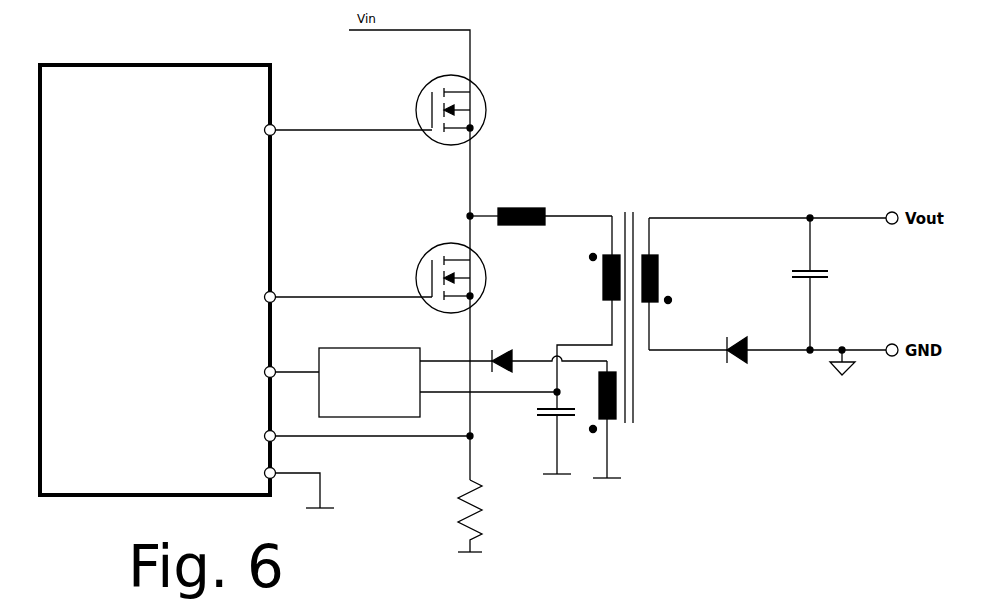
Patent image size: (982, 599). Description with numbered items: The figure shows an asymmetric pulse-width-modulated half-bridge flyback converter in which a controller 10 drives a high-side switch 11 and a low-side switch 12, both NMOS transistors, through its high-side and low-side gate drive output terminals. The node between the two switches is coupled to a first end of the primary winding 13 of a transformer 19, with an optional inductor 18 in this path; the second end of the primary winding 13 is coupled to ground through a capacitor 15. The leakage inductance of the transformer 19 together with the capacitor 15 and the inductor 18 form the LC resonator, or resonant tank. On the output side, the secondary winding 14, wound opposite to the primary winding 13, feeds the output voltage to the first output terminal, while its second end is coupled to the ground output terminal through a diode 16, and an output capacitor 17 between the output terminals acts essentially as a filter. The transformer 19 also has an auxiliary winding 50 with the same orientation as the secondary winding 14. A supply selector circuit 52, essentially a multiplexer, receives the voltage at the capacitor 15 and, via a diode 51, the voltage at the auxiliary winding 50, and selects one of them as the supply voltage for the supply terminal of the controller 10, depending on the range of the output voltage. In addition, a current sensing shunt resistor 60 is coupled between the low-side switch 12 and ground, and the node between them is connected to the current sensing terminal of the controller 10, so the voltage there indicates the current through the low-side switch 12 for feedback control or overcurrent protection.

The controller 10 is at (140, 65).
The high-side switch 11 is at (483, 120).
The low-side switch 12 is at (485, 287).
The primary winding 13 is at (599, 285).
The secondary winding 14 is at (662, 267).
The capacitor 15 is at (568, 420).
The diode 16 is at (740, 362).
The output capacitor 17 is at (792, 280).
The inductor 18 is at (525, 205).
The transformer 19 is at (641, 308).
The auxiliary winding 50 is at (615, 419).
The diode 51 is at (502, 350).
The supply selector circuit 52 is at (340, 348).
The current sensing shunt resistor 60 is at (460, 513).